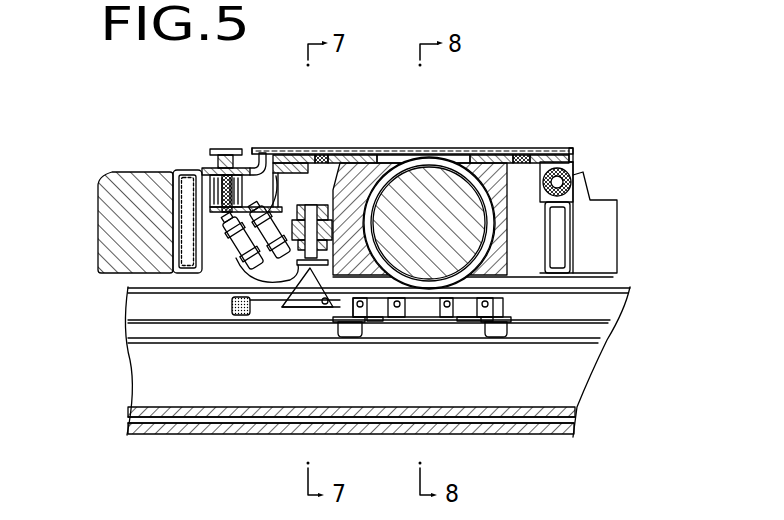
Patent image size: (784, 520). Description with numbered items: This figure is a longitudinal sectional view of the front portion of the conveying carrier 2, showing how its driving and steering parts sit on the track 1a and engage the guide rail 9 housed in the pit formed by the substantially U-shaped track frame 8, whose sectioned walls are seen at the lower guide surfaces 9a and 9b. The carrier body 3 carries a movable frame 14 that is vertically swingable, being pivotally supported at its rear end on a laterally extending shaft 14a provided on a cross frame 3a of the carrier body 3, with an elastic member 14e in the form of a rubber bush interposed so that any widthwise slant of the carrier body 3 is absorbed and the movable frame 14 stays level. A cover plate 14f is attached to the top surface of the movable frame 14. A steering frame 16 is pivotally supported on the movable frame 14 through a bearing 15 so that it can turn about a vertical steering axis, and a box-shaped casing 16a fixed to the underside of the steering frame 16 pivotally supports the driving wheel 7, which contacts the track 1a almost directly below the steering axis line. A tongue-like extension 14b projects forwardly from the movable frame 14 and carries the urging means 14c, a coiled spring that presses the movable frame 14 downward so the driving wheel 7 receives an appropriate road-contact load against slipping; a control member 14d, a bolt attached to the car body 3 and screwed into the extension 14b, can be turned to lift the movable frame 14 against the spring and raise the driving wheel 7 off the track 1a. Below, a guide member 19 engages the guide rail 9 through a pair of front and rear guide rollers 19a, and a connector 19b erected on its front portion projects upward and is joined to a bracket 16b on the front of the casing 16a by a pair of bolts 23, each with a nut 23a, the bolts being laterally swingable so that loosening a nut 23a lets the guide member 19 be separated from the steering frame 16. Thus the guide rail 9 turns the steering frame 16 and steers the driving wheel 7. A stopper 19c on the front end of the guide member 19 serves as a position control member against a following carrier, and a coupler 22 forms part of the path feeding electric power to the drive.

The track 1a is at (128, 290).
The conveying carrier 2 is at (168, 161).
The carrier body 3 is at (172, 233).
The cross frame 3a is at (573, 250).
The driving wheel 7 is at (473, 228).
The track frame 8 is at (200, 425).
The guide rail 9 is at (152, 330).
The upper guide surface 9a is at (250, 413).
The lower guide surface 9b is at (140, 435).
The movable frame 14 is at (570, 177).
The shaft 14a is at (572, 192).
The tongue-like extension 14b is at (251, 162).
The urging means 14c is at (190, 200).
The control member 14d is at (226, 148).
The elastic member 14e is at (567, 187).
The cover plate 14f is at (448, 147).
The bearing 15 is at (335, 147).
The steering frame 16 is at (490, 147).
The casing 16a is at (527, 157).
The bracket 16b is at (362, 158).
The guide member 19 is at (428, 310).
The guide rollers 19a is at (350, 338).
The connector 19b is at (305, 297).
The stopper 19c is at (247, 310).
The coupler 22 is at (280, 250).
The bolts 23 is at (285, 200).
The nut 23a is at (340, 330).